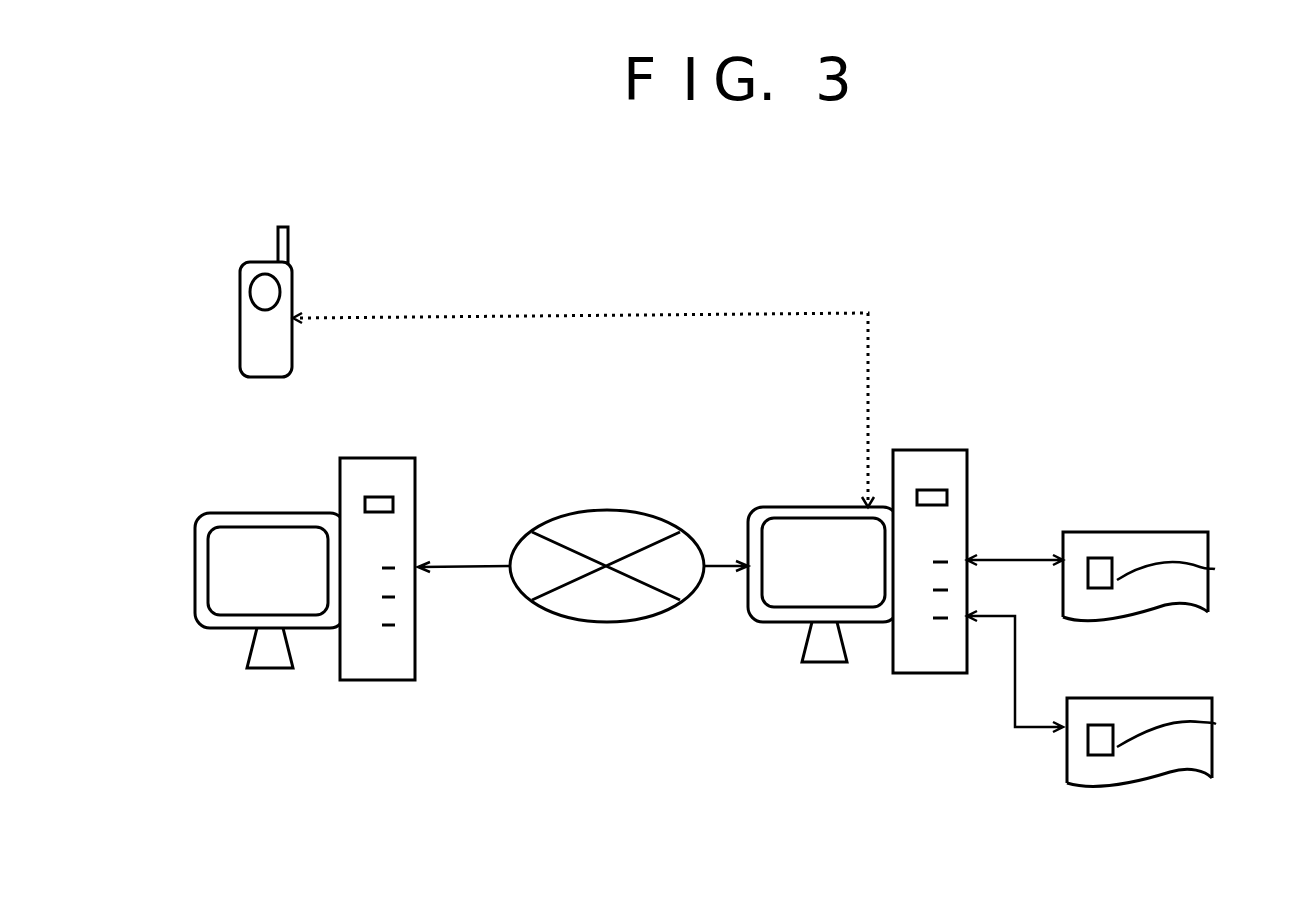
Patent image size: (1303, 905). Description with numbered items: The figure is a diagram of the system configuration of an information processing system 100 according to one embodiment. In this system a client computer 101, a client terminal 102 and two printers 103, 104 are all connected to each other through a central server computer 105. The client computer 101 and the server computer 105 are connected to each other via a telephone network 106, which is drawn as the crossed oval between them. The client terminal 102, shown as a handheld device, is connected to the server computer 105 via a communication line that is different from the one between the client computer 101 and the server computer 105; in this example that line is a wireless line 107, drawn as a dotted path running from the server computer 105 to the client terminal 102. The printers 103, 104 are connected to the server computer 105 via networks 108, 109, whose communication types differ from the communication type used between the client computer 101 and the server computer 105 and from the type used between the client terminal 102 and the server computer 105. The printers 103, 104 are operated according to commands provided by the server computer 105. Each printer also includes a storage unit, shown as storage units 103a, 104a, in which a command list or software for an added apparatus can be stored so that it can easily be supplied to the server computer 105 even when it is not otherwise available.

The information processing system 100 is at (424, 225).
The client computer 101 is at (308, 688).
The client terminal 102 is at (242, 366).
The printer 103 is at (1176, 554).
The storage unit 103a is at (1177, 532).
The printer 104 is at (1180, 719).
The storage unit 104a is at (1205, 728).
The server computer 105 is at (896, 689).
The telephone network 106 is at (615, 625).
The wireless line 107 is at (700, 313).
The network 108 is at (1015, 558).
The network 109 is at (1018, 660).